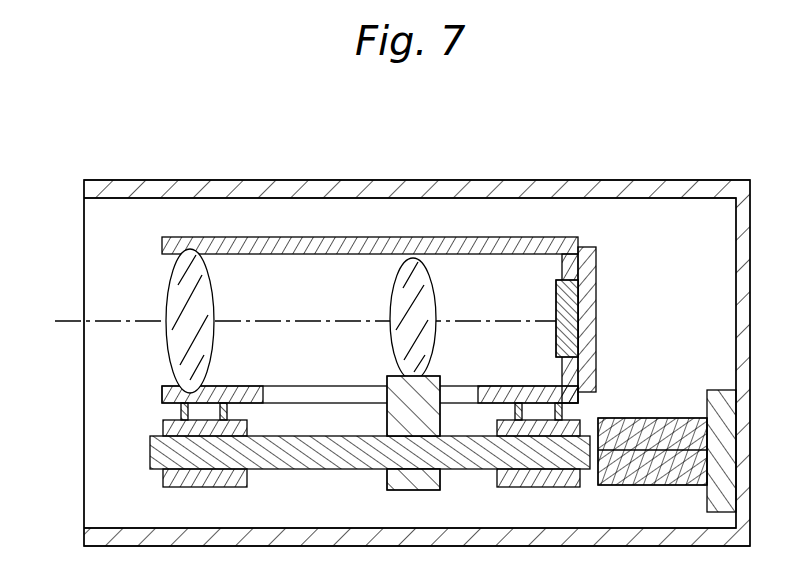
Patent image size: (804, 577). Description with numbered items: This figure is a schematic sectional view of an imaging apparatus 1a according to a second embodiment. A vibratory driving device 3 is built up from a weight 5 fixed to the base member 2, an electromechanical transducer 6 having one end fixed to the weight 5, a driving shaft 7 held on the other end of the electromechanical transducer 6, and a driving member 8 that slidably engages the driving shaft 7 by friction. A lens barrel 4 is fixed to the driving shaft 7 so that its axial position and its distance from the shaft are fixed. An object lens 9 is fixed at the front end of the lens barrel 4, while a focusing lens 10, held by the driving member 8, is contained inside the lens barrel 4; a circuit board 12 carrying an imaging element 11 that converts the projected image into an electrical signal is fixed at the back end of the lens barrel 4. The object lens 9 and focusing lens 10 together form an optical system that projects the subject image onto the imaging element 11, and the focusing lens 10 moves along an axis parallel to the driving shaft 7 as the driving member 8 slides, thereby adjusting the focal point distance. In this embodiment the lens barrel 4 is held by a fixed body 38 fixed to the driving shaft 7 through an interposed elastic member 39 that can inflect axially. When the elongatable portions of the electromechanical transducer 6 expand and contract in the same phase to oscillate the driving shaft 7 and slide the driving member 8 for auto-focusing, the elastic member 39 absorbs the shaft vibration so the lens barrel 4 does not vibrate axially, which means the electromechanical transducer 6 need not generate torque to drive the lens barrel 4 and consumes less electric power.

The imaging apparatus 1a is at (351, 172).
The base member 2 is at (470, 180).
The vibratory driving device 3 is at (667, 413).
The lens barrel 4 is at (578, 238).
The weight 5 is at (718, 390).
The electromechanical transducer 6 is at (678, 418).
The driving shaft 7 is at (468, 470).
The driving member 8 is at (390, 490).
The object lens 9 is at (167, 290).
The focusing lens 10 is at (436, 285).
The imaging element 11 is at (556, 335).
The circuit board 12 is at (596, 290).
The fixed body 38 is at (190, 487).
The elastic member 39 is at (181, 411).